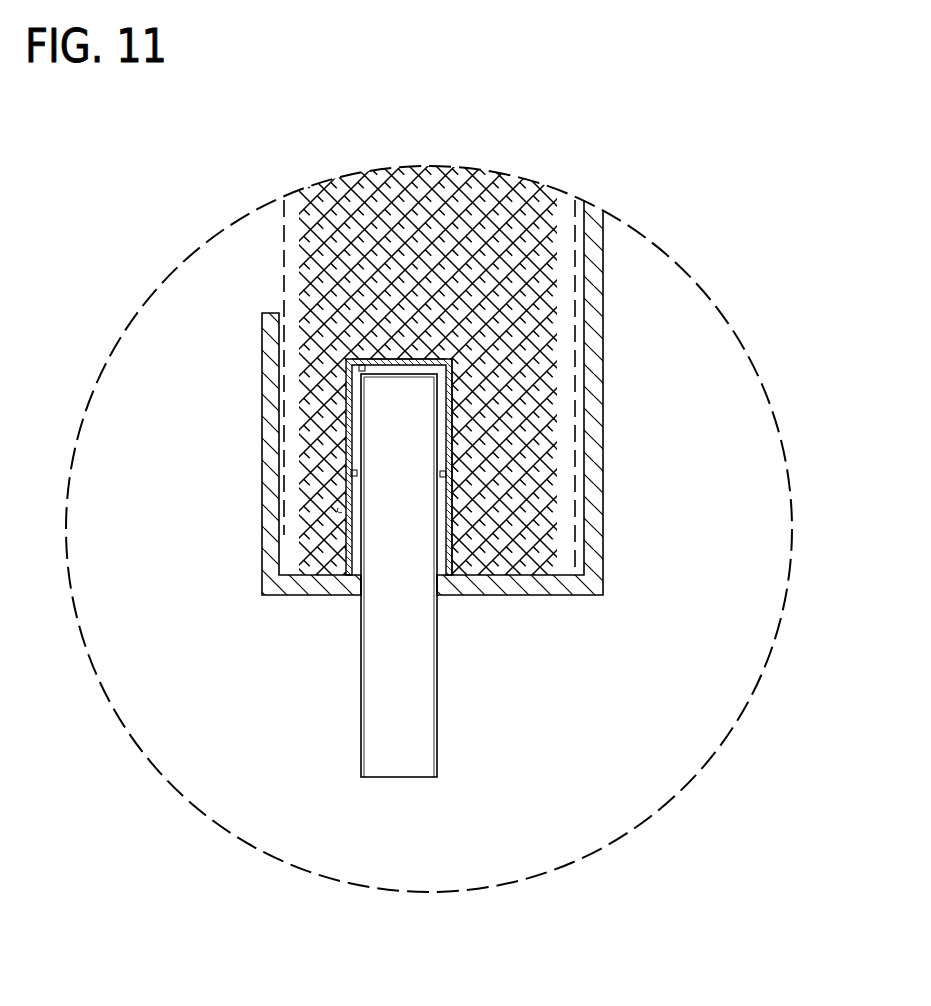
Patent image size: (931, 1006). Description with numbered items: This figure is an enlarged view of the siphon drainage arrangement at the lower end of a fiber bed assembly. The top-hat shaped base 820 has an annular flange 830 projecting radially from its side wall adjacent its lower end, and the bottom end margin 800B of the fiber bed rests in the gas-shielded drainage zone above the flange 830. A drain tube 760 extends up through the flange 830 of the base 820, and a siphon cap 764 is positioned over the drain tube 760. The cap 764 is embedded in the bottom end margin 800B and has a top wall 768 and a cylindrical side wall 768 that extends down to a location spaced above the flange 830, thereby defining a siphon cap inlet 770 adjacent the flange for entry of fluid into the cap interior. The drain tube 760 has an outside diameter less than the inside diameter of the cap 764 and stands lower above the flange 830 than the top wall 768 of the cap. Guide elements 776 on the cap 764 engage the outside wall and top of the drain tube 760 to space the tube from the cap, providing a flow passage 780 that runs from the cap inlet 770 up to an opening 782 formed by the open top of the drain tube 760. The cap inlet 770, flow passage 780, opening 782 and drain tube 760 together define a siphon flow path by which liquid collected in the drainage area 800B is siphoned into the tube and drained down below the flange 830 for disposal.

The drain tube 760 is at (361, 700).
The siphon cap 764 is at (457, 418).
The top wall and cylindrical side wall of the cap 768 is at (423, 370).
The siphon cap inlet 770 is at (452, 594).
The guide elements 776 is at (359, 368).
The flow passage 780 is at (446, 497).
The opening 782 is at (392, 372).
The bottom end margin of the fiber bed 800B is at (493, 212).
The base 820 is at (608, 305).
The annular flange 830 is at (530, 594).